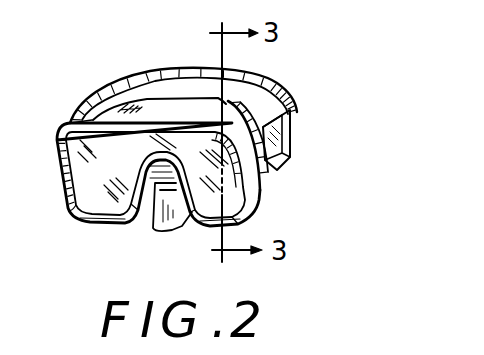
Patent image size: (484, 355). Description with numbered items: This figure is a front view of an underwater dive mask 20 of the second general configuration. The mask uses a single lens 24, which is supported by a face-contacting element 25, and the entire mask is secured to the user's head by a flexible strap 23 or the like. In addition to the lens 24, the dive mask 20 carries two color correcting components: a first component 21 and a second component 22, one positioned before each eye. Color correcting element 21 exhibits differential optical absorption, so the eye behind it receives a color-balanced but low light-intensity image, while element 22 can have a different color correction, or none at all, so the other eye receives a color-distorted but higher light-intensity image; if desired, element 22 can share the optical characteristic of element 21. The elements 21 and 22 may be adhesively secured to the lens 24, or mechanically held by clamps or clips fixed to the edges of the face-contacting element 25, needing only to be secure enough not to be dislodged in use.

The dive mask 20 is at (137, 242).
The first color correcting component 21 is at (189, 163).
The second color correcting component 22 is at (103, 171).
The flexible strap 23 is at (283, 80).
The lens 24 is at (238, 191).
The face-contacting element 25 is at (181, 92).